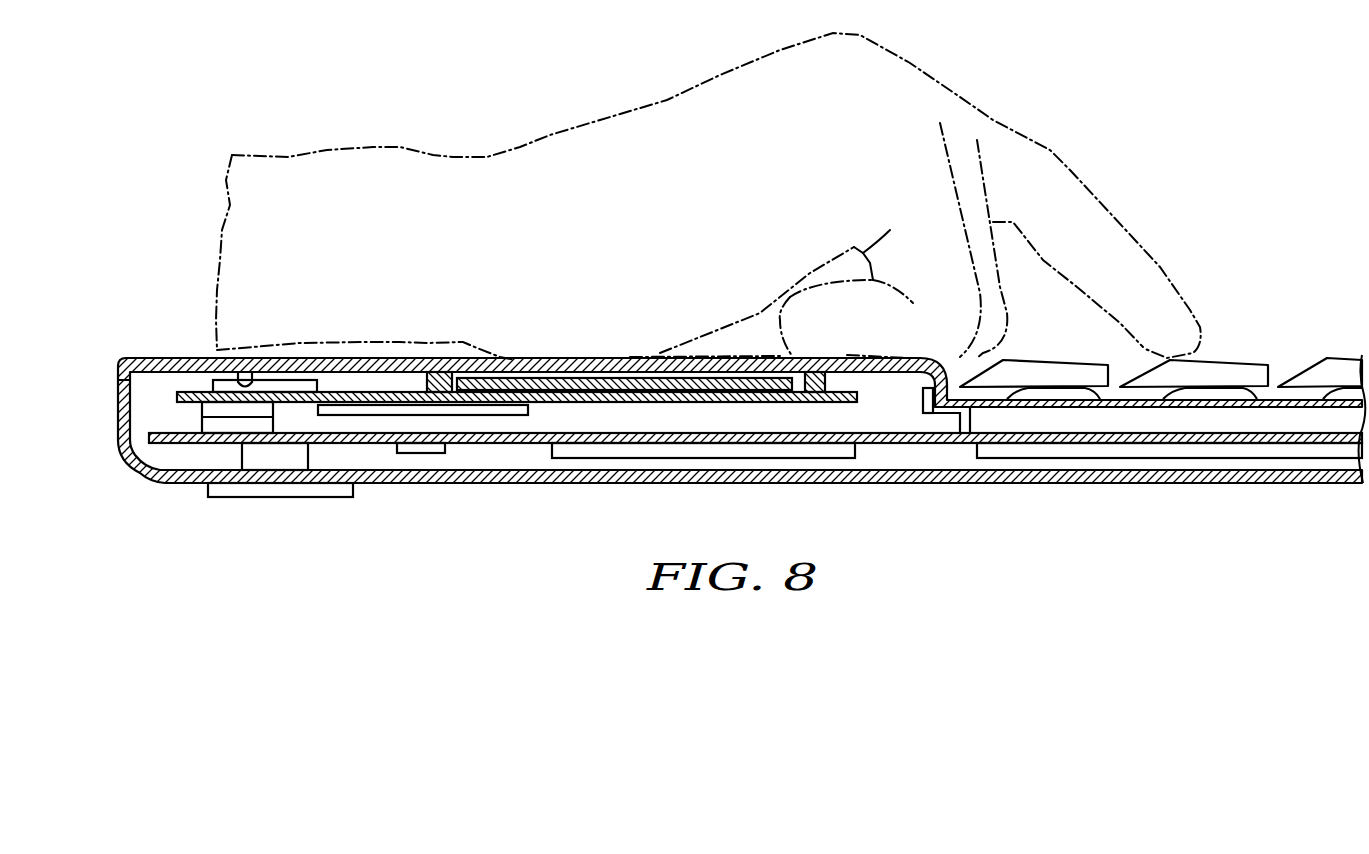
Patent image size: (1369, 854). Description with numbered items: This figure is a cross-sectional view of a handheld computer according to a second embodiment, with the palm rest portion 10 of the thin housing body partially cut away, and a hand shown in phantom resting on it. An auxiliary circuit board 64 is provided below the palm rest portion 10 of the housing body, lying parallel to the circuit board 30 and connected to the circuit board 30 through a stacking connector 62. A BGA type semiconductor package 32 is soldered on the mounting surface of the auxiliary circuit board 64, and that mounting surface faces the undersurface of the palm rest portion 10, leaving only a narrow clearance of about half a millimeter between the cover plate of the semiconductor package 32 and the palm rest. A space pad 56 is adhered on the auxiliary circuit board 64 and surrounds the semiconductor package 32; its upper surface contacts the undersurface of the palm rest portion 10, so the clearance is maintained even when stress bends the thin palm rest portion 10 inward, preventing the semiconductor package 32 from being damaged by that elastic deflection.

The palm rest portion 10 is at (145, 360).
The circuit board 30 is at (913, 447).
The semiconductor package 32 is at (562, 385).
The space pad 56 is at (445, 374).
The stacking connector 62 is at (200, 417).
The auxiliary circuit board 64 is at (466, 396).